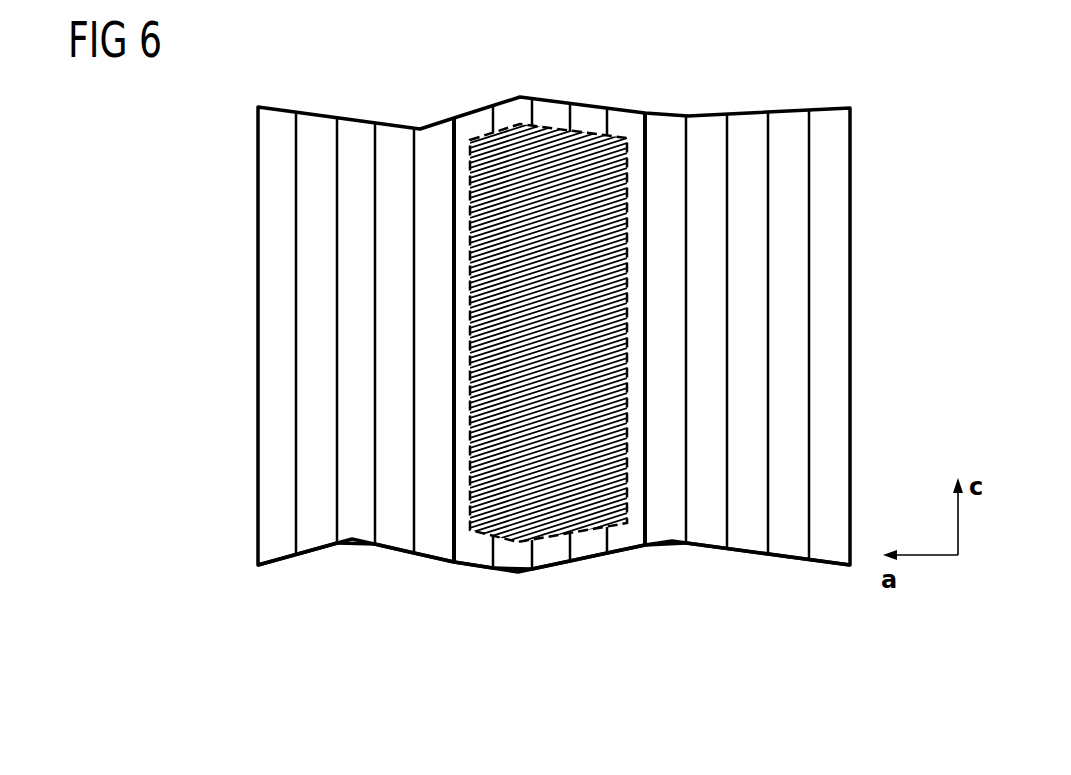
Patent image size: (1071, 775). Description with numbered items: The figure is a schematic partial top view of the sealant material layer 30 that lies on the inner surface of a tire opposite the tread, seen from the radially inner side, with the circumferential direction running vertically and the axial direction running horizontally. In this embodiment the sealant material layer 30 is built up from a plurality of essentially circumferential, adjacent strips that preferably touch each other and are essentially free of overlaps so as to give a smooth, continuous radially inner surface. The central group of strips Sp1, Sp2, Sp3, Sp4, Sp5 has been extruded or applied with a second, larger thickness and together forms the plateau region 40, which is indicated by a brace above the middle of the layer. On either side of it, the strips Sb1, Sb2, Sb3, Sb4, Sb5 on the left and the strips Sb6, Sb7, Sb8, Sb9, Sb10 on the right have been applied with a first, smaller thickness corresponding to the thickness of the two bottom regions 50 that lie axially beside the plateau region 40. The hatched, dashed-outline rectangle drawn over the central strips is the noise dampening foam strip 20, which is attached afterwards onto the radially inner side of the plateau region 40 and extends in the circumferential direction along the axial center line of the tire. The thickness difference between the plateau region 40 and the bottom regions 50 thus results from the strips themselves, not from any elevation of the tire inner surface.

The foam strip 20 is at (602, 157).
The sealant material layer 30 is at (236, 470).
The plateau region 40 is at (635, 97).
The bottom region 50 is at (445, 95).
The circumferential sealant strip Sb1 is at (282, 556).
The circumferential sealant strip Sb2 is at (322, 548).
The circumferential sealant strip Sb3 is at (360, 542).
The circumferential sealant strip Sb4 is at (398, 550).
The circumferential sealant strip Sb5 is at (437, 558).
The circumferential sealant strip Sp1 is at (478, 567).
The circumferential sealant strip Sp2 is at (518, 573).
The circumferential sealant strip Sp3 is at (553, 568).
The circumferential sealant strip Sp4 is at (595, 560).
The circumferential sealant strip Sp5 is at (632, 553).
The circumferential sealant strip Sb6 is at (673, 542).
The circumferential sealant strip Sb7 is at (712, 548).
The circumferential sealant strip Sb8 is at (752, 553).
The circumferential sealant strip Sb9 is at (792, 558).
The circumferential sealant strip Sb10 is at (832, 567).